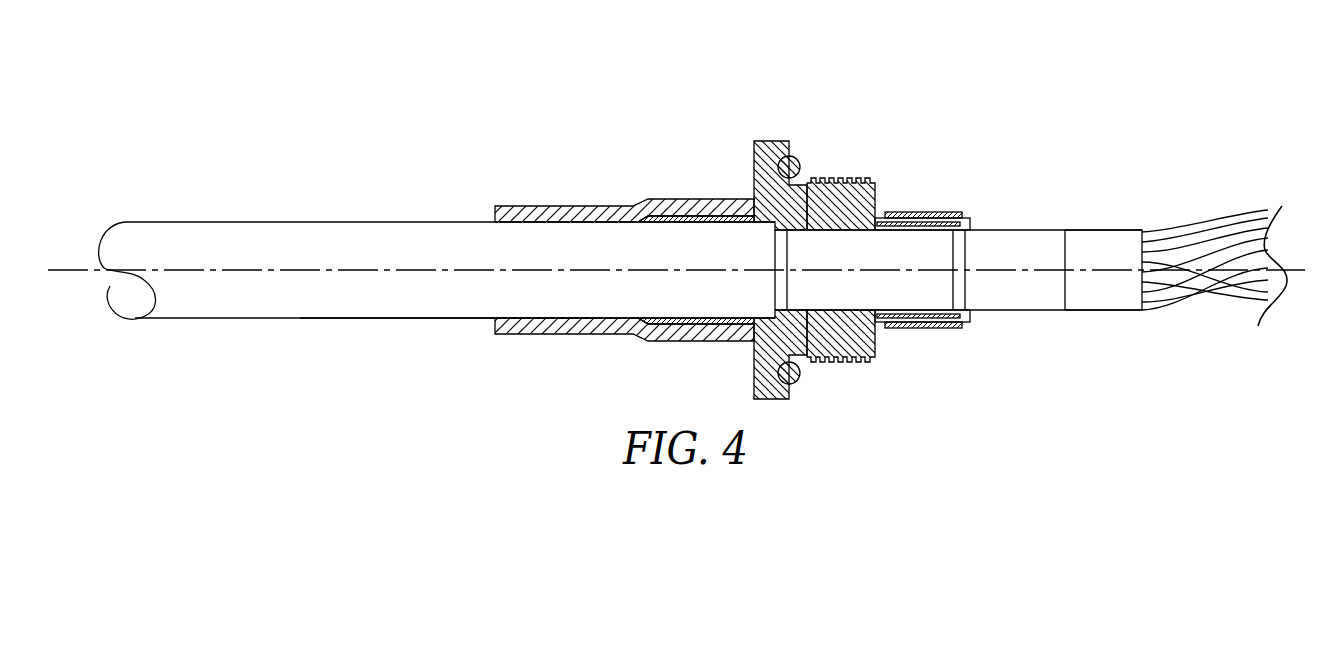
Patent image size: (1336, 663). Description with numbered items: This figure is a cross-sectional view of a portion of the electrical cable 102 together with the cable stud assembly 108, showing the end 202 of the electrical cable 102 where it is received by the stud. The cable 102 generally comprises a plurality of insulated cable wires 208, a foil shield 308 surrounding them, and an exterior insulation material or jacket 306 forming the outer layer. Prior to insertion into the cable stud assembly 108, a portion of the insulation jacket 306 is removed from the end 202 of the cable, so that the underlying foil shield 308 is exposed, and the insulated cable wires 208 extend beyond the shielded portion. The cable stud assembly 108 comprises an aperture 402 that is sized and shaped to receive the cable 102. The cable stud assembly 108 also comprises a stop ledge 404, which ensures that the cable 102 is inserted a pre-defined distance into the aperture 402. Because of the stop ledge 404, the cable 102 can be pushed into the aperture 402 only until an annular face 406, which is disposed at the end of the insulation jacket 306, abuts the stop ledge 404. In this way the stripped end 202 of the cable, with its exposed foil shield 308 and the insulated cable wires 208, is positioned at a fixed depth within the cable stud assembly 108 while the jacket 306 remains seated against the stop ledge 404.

The electrical cable 102 is at (300, 220).
The cable stud assembly 108 is at (908, 132).
The end of the electrical cable 202 is at (452, 92).
The insulated cable wires 208 is at (1217, 310).
The exterior insulation material (jacket) 306 is at (370, 320).
The foil shield 308 is at (1027, 312).
The aperture 402 is at (494, 242).
The stop ledge 404 is at (775, 210).
The annular face 406 is at (812, 362).